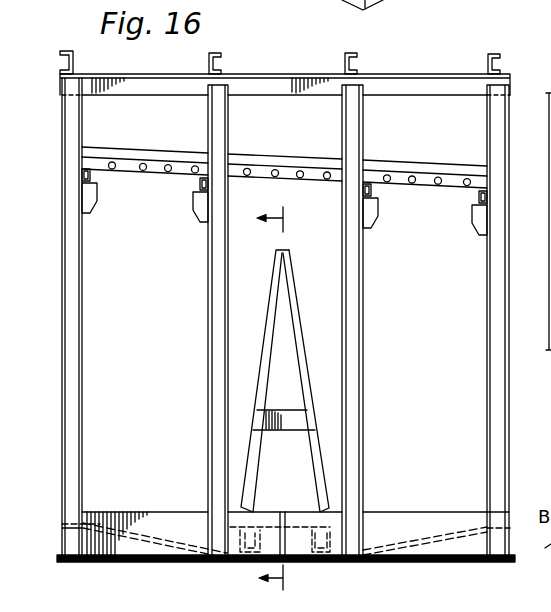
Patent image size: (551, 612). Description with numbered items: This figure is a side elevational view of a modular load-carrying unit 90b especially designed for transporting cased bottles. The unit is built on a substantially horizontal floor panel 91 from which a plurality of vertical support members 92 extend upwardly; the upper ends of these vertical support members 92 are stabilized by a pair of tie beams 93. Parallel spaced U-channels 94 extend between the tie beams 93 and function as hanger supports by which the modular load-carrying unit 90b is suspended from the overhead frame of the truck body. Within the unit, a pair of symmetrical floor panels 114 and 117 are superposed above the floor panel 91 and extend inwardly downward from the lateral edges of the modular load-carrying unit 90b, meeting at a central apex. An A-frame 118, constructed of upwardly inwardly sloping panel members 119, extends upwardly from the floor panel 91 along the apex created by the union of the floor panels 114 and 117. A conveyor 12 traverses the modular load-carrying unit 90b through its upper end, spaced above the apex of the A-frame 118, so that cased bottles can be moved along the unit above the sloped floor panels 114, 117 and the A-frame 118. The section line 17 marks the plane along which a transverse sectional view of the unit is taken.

The conveyor 12 is at (280, 162).
The section line 17- 17 is at (256, 399).
The modular load-carrying unit 90b is at (63, 374).
The floor panel 91 is at (438, 563).
The vertical support members 92 is at (363, 143).
The tie beams 93 is at (395, 79).
The U-channels 94 is at (221, 62).
The floor panel 114 is at (397, 543).
The floor panel 117 is at (150, 532).
The A-frame 118 is at (274, 287).
The panel members 119 is at (302, 320).